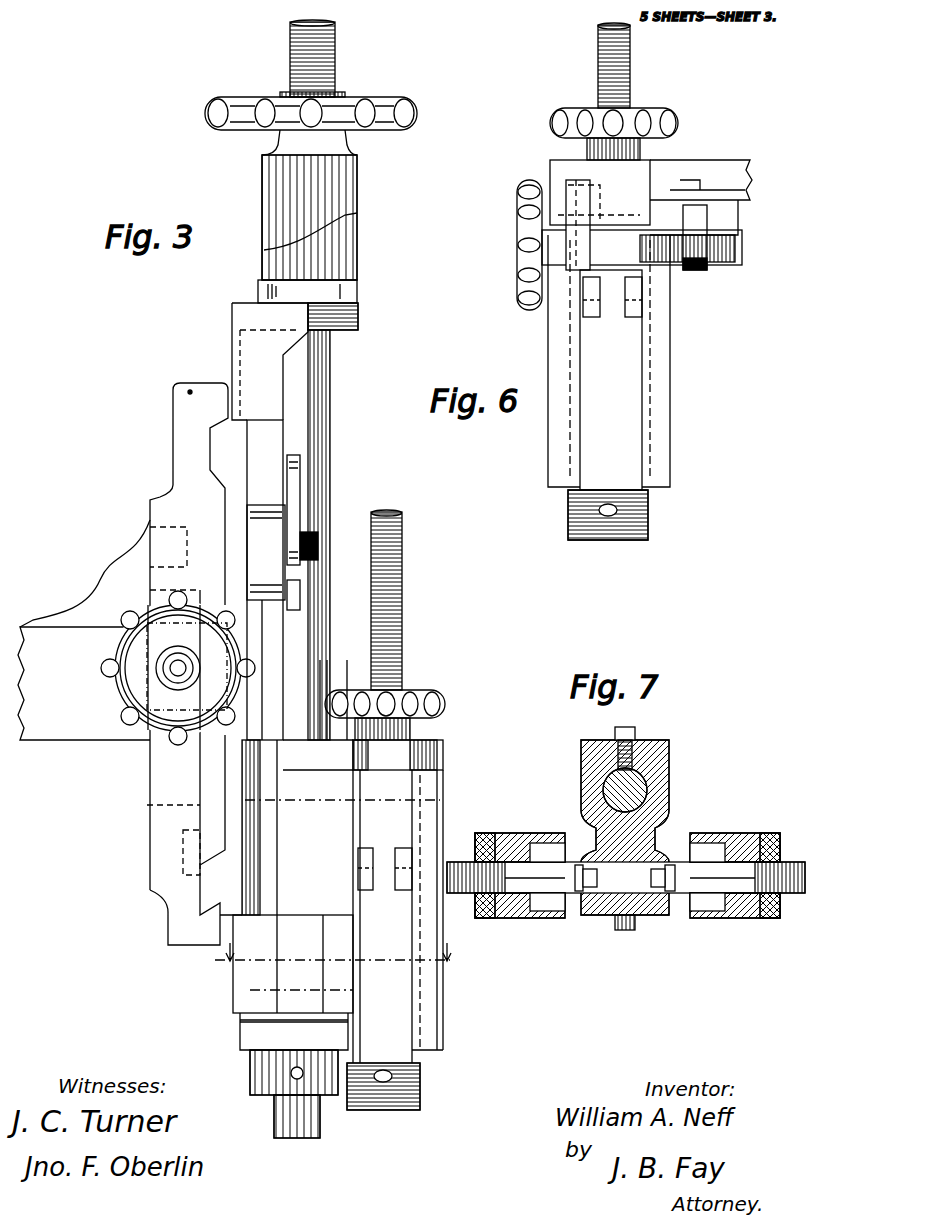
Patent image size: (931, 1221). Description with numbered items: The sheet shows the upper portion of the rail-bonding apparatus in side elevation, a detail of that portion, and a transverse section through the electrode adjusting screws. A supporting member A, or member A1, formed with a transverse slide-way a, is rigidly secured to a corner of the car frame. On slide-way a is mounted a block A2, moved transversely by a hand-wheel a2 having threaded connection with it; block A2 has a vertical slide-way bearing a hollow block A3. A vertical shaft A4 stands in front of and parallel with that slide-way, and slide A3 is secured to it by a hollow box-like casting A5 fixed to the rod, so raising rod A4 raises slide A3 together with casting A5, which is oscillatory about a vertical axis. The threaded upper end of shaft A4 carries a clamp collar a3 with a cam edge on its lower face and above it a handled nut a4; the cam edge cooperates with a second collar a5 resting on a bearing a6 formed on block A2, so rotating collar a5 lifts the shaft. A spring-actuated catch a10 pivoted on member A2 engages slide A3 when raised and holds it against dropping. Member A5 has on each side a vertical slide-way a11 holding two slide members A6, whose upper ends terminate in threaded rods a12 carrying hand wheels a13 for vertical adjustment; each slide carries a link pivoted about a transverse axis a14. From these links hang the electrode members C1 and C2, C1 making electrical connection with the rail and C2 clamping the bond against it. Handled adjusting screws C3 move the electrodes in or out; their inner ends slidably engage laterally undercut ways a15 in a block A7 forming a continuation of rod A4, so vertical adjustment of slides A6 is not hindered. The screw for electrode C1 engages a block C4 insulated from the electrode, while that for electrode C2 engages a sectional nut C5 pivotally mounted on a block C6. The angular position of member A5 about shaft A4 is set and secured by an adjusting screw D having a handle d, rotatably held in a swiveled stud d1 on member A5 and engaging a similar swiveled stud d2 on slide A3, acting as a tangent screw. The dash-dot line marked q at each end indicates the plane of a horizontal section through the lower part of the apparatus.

In FIG. 3, the base or bed A is at (84, 630).
In FIG. 3, the supporting member A1 is at (165, 515).
In FIG. 3, the transversely slidable block A2 is at (267, 484).
In FIG. 3, the hollow block slide A3 is at (307, 797).
In FIG. 3, the vertical shaft A4 is at (335, 68).
In FIG. 7, the vertical shaft A4 is at (650, 760).
In FIG. 3, the box-like casting A5 is at (443, 760).
In FIG. 6, the box-like casting A5 is at (670, 395).
In FIG. 3, the slide member A6 is at (383, 940).
In FIG. 6, the slide member A6 is at (678, 530).
In FIG. 7, the block A7 is at (670, 760).
In FIG. 3, the transverse slide-way a is at (215, 426).
In FIG. 3, the hand-wheel a2 is at (135, 730).
In FIG. 3, the clamp collar a3 is at (357, 191).
In FIG. 3, the handled nut a4 is at (417, 114).
In FIG. 3, the second collar a5 is at (358, 250).
In FIG. 3, the bearing a6 is at (340, 300).
In FIG. 3, the spring actuated catch a10 is at (288, 514).
In FIG. 3, the vertical slide-way a11 is at (358, 958).
In FIG. 6, the vertical slide-way a11 is at (640, 370).
In FIG. 3, the threaded rod a12 is at (402, 662).
In FIG. 6, the threaded rod a12 is at (632, 72).
In FIG. 3, the hand wheel a13 is at (440, 700).
In FIG. 6, the hand wheel a13 is at (678, 112).
In FIG. 3, the transverse axis a14 is at (385, 860).
In FIG. 6, the transverse axis a14 is at (608, 300).
In FIG. 7, the undercut ways a15 is at (618, 918).
In FIG. 3, the section line q is at (327, 961).
In FIG. 6, the handle d is at (517, 228).
In FIG. 6, the swiveled stud d1 is at (575, 280).
In FIG. 6, the swiveled stud d2 is at (690, 270).
In FIG. 6, the adjusting screw D is at (545, 290).
In FIG. 7, the electrode member C1 is at (735, 920).
In FIG. 7, the electrode member C2 is at (515, 920).
In FIG. 7, the adjusting screw C3 is at (577, 895).
In FIG. 7, the insulated block C4 is at (770, 920).
In FIG. 7, the sectional nut C5 is at (466, 920).
In FIG. 7, the block C6 is at (478, 834).